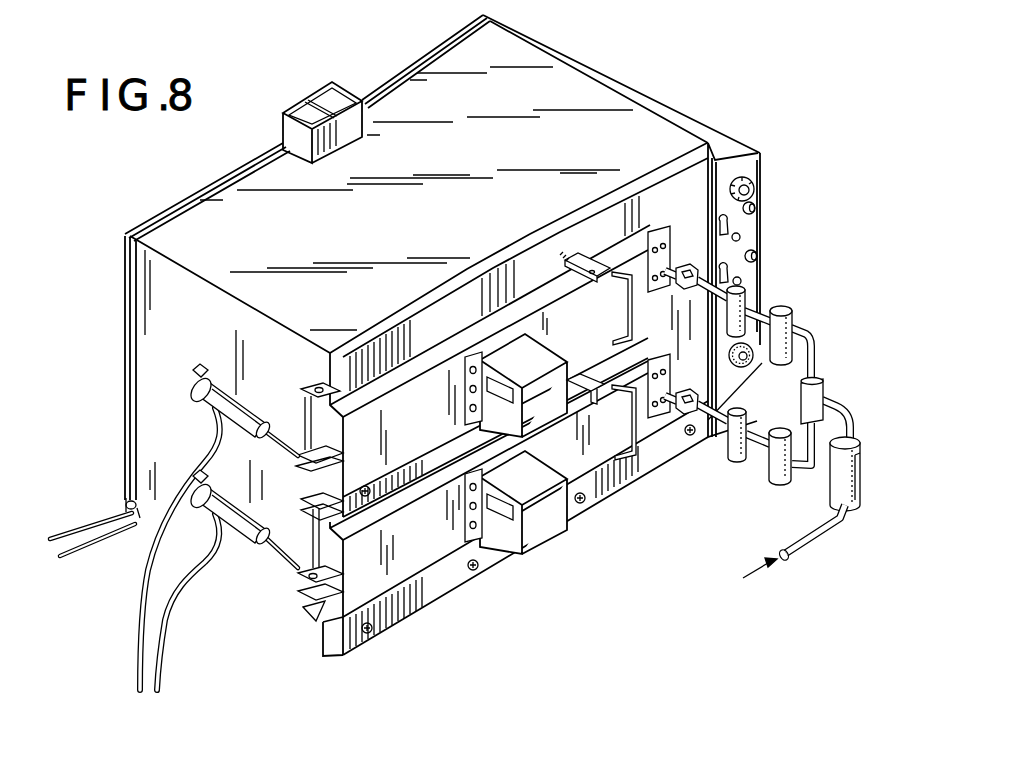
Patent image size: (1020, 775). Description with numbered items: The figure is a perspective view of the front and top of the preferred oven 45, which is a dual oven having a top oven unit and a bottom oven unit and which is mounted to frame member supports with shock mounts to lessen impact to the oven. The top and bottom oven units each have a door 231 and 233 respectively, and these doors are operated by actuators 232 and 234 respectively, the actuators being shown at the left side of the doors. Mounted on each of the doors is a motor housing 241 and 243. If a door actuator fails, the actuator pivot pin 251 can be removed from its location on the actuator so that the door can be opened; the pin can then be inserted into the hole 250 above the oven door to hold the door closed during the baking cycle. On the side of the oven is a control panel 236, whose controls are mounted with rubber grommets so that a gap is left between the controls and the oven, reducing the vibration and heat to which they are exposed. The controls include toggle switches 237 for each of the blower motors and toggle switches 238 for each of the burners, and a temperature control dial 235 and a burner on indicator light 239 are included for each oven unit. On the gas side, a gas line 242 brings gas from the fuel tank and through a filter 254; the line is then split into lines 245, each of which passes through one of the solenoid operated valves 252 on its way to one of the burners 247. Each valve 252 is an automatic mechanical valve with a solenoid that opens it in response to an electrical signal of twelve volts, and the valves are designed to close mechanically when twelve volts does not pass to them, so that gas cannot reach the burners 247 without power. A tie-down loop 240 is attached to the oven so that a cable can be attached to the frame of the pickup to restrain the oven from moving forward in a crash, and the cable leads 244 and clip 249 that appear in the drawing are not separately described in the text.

The oven 45 is at (359, 73).
The door 231 is at (524, 268).
The actuator 232 is at (252, 423).
The door 233 is at (431, 530).
The actuator 234 is at (248, 540).
The temperature control dial 235 is at (752, 192).
The control panel 236 is at (748, 148).
The toggle switches 237 is at (758, 211).
The toggle switches 238 is at (719, 275).
The burner on indicator light 239 is at (741, 237).
The tie-down loop 240 is at (124, 503).
The motor housing 241 is at (546, 414).
The gas line 242 is at (798, 554).
The motor housing 243 is at (540, 537).
The cable leads 244 is at (80, 558).
The lines 245 is at (816, 357).
The burners 247 is at (652, 232).
The clip 249 is at (580, 258).
The hole 250 is at (592, 383).
The actuator pivot pin 251 is at (604, 380).
The automatic mechanical valves 252 is at (760, 292).
The filter 254 is at (857, 502).